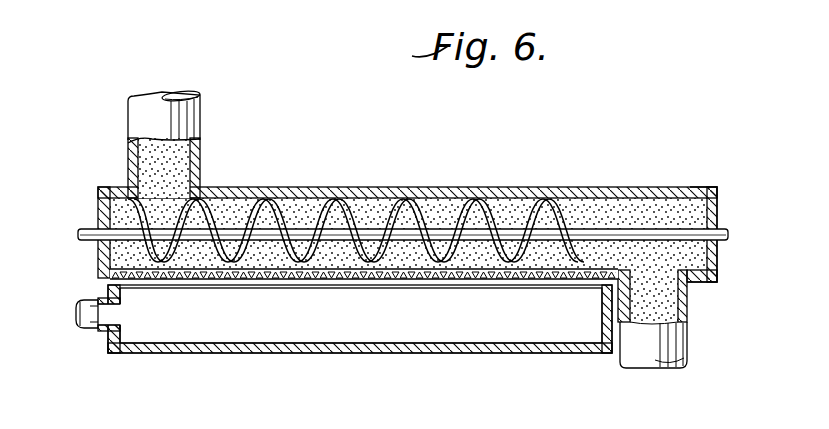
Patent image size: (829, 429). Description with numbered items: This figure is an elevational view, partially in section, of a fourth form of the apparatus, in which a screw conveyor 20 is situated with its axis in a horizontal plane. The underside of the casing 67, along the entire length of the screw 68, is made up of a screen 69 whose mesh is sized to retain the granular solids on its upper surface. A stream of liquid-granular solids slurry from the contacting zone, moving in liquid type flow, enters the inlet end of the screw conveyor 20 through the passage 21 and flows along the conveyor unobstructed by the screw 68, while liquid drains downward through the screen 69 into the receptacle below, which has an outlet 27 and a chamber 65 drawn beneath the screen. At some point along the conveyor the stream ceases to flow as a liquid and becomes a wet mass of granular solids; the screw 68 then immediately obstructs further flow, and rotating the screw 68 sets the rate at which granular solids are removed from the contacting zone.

The screw conveyor 20 is at (421, 191).
The passage 21 is at (193, 122).
The outlet pipe 27 is at (660, 357).
The lower chamber 65 is at (418, 354).
The casing 67 is at (702, 179).
The screw 68 is at (545, 203).
The screen 69 is at (473, 282).